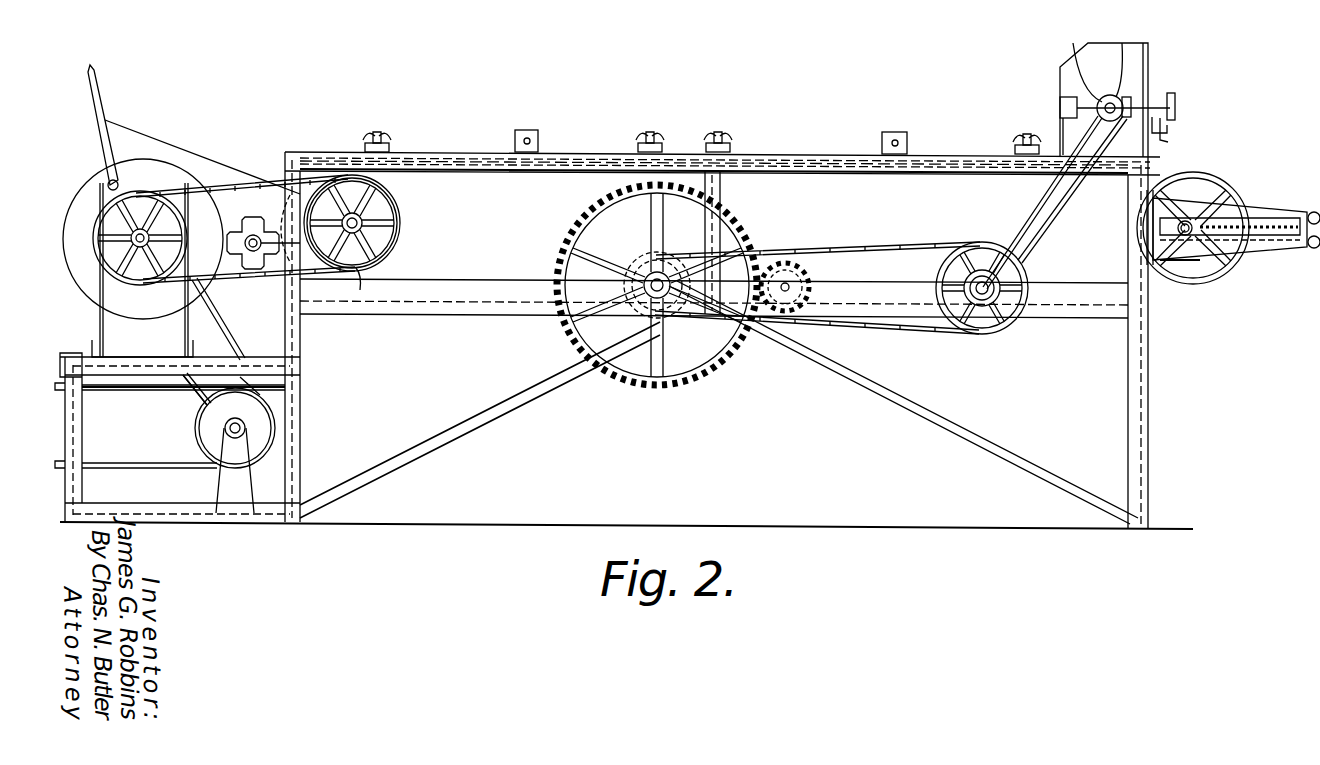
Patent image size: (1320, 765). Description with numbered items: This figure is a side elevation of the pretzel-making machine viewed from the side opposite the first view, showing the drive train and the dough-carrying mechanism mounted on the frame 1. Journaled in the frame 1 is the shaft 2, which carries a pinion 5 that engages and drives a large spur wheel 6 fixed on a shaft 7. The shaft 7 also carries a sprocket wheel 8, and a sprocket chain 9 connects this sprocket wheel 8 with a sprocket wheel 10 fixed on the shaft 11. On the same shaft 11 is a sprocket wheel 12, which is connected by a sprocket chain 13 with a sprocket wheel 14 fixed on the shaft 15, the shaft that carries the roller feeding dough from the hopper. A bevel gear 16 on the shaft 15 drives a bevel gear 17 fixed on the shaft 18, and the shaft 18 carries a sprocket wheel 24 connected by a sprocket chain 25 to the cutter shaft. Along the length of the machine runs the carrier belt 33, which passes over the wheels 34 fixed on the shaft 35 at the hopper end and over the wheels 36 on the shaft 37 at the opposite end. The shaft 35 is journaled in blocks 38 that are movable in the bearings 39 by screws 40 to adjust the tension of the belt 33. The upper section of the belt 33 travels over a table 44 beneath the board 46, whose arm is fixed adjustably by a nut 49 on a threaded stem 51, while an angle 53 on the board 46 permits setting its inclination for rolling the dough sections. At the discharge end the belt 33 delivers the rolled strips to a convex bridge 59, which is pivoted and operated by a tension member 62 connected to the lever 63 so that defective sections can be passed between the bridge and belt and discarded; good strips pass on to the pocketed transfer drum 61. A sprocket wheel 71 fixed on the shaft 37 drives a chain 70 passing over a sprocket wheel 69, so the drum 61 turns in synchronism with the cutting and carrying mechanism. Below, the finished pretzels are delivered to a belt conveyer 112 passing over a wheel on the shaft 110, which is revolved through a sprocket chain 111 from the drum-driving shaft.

The frame 1 is at (468, 310).
The shaft 2 is at (800, 310).
The pinion 5 is at (783, 300).
The spur wheel 6 is at (648, 389).
The shaft 7 is at (645, 275).
The sprocket wheel 8 is at (664, 268).
The sprocket chain 9 is at (890, 245).
The sprocket wheel 10 is at (975, 335).
The shaft 11 is at (990, 300).
The sprocket wheel 12 is at (996, 296).
The sprocket chain 13 is at (1056, 240).
The sprocket wheel 14 is at (1118, 43).
The shaft 15 is at (1060, 105).
The bevel gear 16 is at (1104, 98).
The bevel gear 17 is at (1126, 97).
The shaft 18 is at (1152, 108).
The sprocket wheel 24 is at (1175, 118).
The sprocket chain 25 is at (1175, 100).
The carrier belt 33 is at (518, 282).
The wheels 34 is at (1200, 180).
The shaft 35 is at (1210, 210).
The wheels 36 is at (392, 245).
The shaft 37 is at (365, 220).
The blocks 38 is at (1180, 262).
The bearings 39 is at (1255, 248).
The screws 40 is at (1290, 250).
The table 44 is at (782, 203).
The board 46 is at (832, 155).
The nuts 49 is at (392, 140).
The threaded stems 51 is at (377, 130).
The angle 53 is at (534, 130).
The convex bridge 59 is at (275, 205).
The transfer drum 61 is at (247, 280).
The tension member 62 is at (198, 157).
The lever 63 is at (100, 92).
The sprocket wheel 69 is at (150, 200).
The chain 70 is at (237, 183).
The sprocket wheel 71 is at (362, 272).
The shaft 110 is at (230, 431).
The sprocket chain 111 is at (188, 392).
The belt conveyer 112 is at (125, 390).